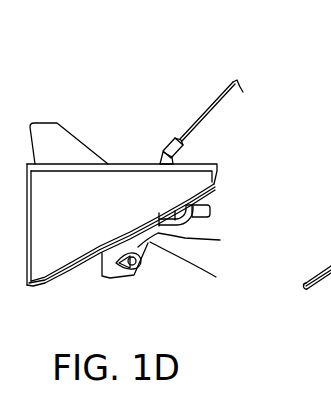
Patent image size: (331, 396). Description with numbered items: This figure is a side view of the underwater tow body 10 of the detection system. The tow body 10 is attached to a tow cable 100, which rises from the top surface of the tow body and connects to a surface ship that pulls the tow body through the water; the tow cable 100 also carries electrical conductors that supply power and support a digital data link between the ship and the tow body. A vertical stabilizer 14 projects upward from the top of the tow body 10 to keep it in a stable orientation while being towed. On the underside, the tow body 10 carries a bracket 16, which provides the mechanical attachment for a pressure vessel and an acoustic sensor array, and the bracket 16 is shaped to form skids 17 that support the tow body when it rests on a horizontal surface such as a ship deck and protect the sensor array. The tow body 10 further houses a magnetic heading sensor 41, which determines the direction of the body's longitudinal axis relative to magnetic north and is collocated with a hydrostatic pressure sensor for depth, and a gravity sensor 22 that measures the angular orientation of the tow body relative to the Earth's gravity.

The tow body 10 is at (142, 86).
The vertical stabilizer 14 is at (91, 121).
The bracket 16 is at (157, 232).
The skids 17 is at (148, 252).
The gravity sensor 22 is at (134, 276).
The magnetic heading sensor 41 is at (210, 213).
The tow cable 100 is at (222, 101).